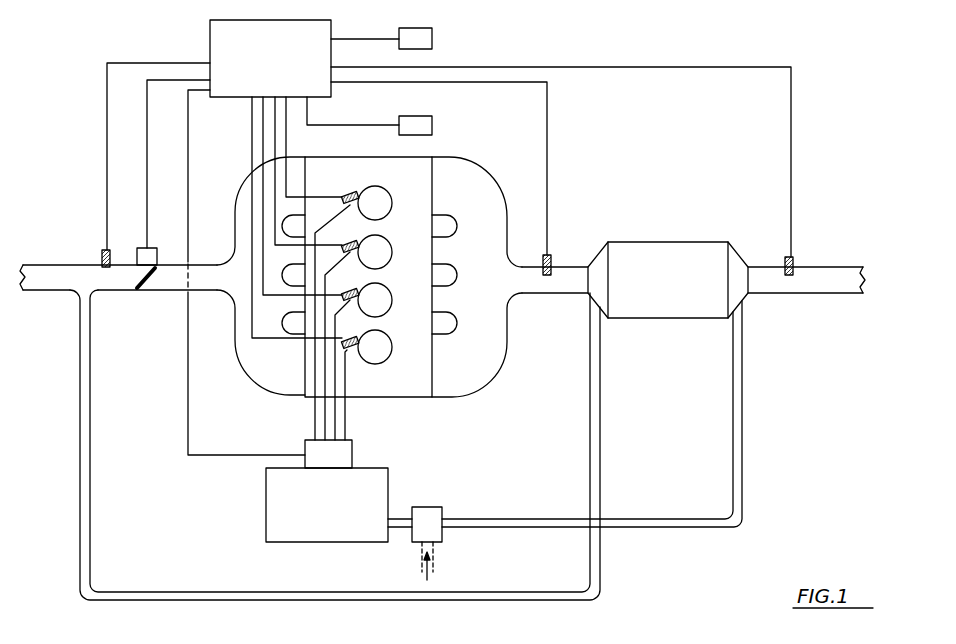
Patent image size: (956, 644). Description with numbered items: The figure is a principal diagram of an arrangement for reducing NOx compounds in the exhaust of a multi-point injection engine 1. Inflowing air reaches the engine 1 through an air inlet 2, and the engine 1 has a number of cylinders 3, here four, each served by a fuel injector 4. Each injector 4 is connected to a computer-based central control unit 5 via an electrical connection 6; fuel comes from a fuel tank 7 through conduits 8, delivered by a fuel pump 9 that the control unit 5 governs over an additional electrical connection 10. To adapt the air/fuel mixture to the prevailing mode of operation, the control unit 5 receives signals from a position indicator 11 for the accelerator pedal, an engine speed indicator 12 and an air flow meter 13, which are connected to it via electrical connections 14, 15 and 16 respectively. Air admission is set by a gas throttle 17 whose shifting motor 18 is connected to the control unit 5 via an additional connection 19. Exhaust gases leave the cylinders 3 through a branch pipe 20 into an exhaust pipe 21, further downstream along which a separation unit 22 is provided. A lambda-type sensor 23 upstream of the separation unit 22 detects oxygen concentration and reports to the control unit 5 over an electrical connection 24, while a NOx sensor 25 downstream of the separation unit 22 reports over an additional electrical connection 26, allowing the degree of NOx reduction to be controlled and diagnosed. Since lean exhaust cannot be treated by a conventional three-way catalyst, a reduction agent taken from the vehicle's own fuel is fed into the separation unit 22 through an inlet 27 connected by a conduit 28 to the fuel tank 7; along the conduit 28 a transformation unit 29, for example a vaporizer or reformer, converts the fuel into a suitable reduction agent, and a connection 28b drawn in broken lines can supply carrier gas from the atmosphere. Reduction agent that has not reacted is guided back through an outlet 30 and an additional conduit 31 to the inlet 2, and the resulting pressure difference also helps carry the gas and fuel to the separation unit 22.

The engine 1 is at (412, 375).
The air inlet 2 is at (173, 285).
The cylinders 3 is at (372, 352).
The fuel injectors 4 is at (348, 350).
The control unit 5 is at (213, 45).
The electrical connection 6 is at (267, 340).
The fuel tank 7 is at (277, 508).
The conduits 8 is at (315, 425).
The fuel pump 9 is at (317, 458).
The additional electrical connection 10 is at (187, 390).
The position indicator 11 is at (427, 40).
The engine speed indicator 12 is at (427, 123).
The air flow meter 13 is at (103, 250).
The electrical connection 14 is at (374, 39).
The electrical connection 15 is at (367, 125).
The electrical connection 16 is at (107, 118).
The gas throttle 17 is at (145, 287).
The shifting motor 18 is at (140, 248).
The additional connection 19 is at (147, 134).
The branch pipe 20 is at (470, 367).
The exhaust pipe 21 is at (532, 295).
The separation unit 22 is at (662, 248).
The sensor 23 is at (553, 253).
The electrical connection 24 is at (548, 228).
The NOx sensor 25 is at (762, 258).
The additional electrical connection 26 is at (788, 256).
The inlet 27 is at (743, 318).
The conduit 28 is at (540, 529).
The connection 28b is at (436, 557).
The transformation unit 29 is at (413, 542).
The outlet 30 is at (588, 320).
The additional conduit 31 is at (600, 373).